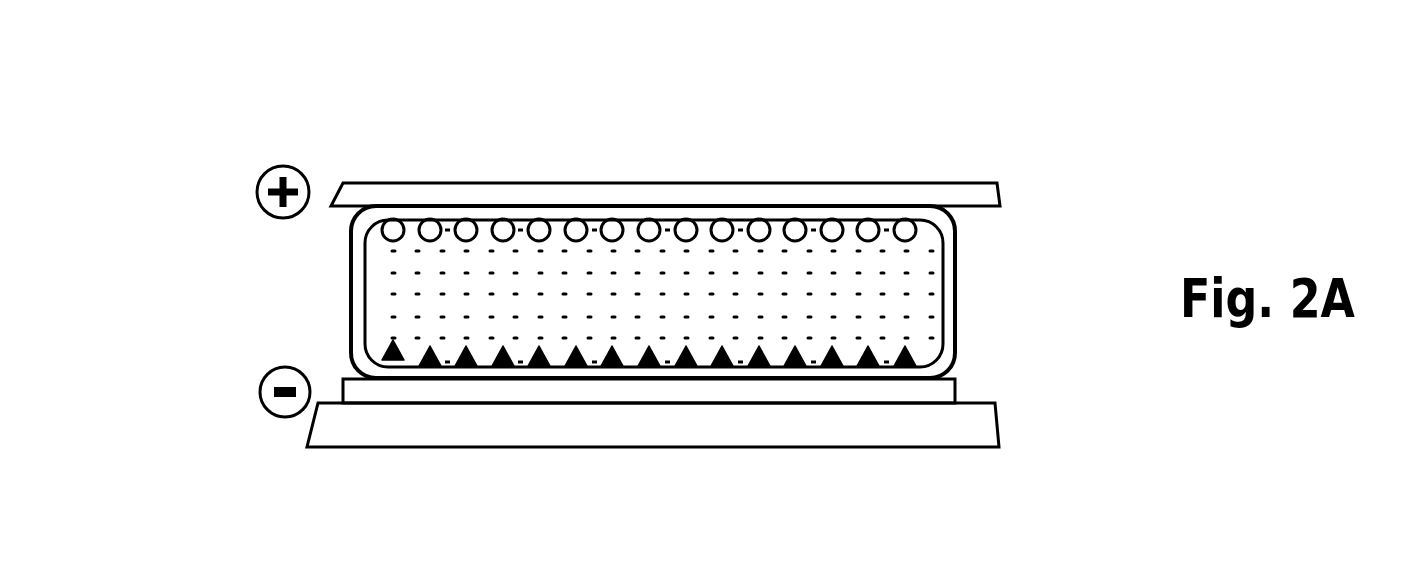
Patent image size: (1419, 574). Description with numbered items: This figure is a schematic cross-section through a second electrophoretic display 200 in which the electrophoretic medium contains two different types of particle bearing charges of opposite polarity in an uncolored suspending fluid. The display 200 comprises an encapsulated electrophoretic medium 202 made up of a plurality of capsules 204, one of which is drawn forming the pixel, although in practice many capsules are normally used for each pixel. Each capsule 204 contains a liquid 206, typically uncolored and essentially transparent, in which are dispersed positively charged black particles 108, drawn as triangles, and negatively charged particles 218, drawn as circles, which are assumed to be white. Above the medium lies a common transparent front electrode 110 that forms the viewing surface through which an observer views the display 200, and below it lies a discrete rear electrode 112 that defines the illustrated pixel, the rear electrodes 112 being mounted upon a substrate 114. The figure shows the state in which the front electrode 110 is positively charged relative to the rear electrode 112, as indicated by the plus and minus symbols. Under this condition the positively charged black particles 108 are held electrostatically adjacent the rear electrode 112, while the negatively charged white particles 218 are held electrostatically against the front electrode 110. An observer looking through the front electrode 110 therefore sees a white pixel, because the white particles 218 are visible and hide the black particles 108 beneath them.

The second electrophoretic display 200 is at (360, 85).
The front electrode 110 is at (707, 183).
The encapsulated electrophoretic medium 202 is at (976, 252).
The capsule 204 is at (955, 312).
The liquid 206 is at (828, 302).
The negatively charged particles 218 is at (498, 228).
The positively charged black particles 108 is at (613, 355).
The rear electrode 112 is at (955, 387).
The substrate 114 is at (997, 418).